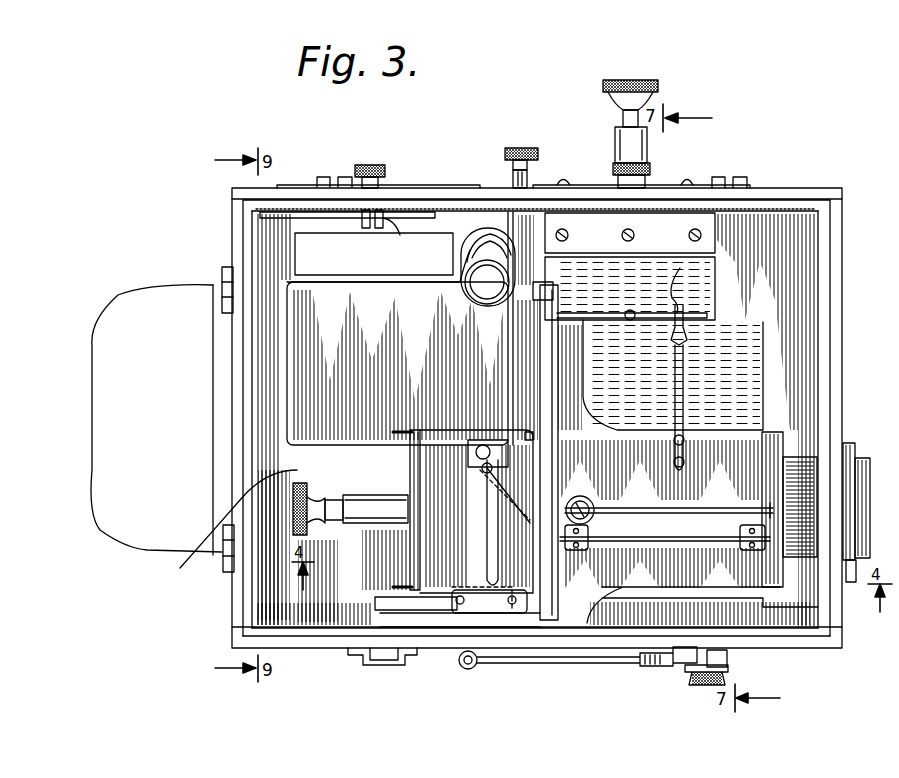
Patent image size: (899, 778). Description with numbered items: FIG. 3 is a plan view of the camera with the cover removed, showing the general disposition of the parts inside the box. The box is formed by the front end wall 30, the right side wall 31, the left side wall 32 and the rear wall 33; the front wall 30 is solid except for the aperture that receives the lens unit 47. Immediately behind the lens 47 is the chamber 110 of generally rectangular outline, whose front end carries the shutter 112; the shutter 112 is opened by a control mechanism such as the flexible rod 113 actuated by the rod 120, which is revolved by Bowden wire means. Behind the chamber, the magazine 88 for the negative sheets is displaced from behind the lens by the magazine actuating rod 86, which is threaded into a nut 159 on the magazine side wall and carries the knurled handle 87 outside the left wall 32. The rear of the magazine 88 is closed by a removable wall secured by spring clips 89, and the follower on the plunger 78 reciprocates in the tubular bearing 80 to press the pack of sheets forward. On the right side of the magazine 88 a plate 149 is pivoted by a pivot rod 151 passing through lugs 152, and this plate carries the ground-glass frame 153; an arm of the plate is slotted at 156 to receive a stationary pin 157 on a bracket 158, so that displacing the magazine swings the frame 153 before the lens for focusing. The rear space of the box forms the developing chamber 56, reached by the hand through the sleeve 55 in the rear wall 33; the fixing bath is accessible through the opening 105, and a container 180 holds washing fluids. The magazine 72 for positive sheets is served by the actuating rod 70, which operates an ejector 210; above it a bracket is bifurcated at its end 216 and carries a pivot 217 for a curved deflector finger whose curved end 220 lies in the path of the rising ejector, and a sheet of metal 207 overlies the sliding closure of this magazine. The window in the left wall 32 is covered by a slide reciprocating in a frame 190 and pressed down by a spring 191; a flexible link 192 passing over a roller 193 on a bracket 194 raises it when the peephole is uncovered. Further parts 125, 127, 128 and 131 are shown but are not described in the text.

The front end wall 30 is at (843, 361).
The right side wall 31 is at (318, 648).
The left side wall 32 is at (490, 192).
The rear wall 33 is at (222, 263).
The lens unit 47 is at (860, 445).
The sleeve 55 is at (167, 533).
The developing chamber 56 is at (222, 528).
The actuating rod 70 is at (640, 300).
The magazine 72 is at (700, 286).
The plunger 78 is at (350, 513).
The tubular bearing 80 is at (380, 522).
The magazine actuating rod 86 is at (520, 186).
The knurled handle 87 is at (526, 149).
The magazine 88 is at (425, 472).
The spring clips 89 is at (405, 432).
The opening 105 is at (300, 262).
The chamber 110 is at (745, 440).
The shutter 112 is at (783, 462).
The flexible rod 113 is at (665, 508).
The rod 120 is at (685, 537).
The vertical plate 125 is at (548, 472).
The partition 127 is at (540, 300).
The bracket block 128 is at (548, 282).
The screw 131 is at (556, 561).
The plate 149 is at (470, 585).
The pivot rod 151 is at (530, 590).
The lugs 152 is at (489, 600).
The frame 153 is at (375, 604).
The slot 156 is at (490, 497).
The pin 157 is at (480, 471).
The bracket 158 is at (522, 490).
The nut 159 is at (525, 435).
The container 180 is at (300, 330).
The frame 190 is at (325, 218).
The spring 191 is at (270, 230).
The flexible link 192 is at (366, 228).
The roller 193 is at (398, 228).
The bracket 194 is at (379, 228).
The sheet of metal 207 is at (698, 228).
The ejector 210 is at (612, 320).
The bifurcated end 216 is at (683, 342).
The pivot 217 is at (685, 330).
The curved end 220 is at (662, 286).